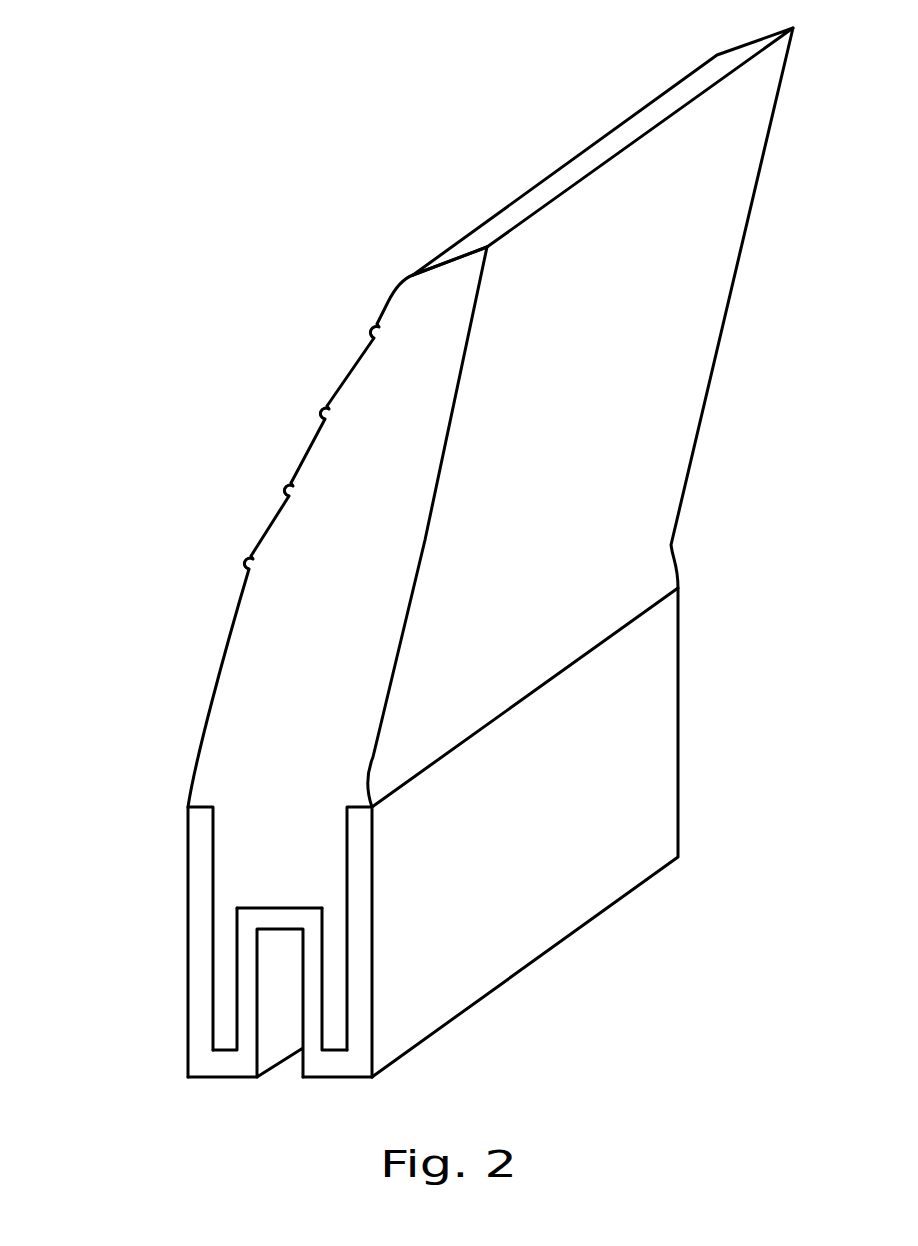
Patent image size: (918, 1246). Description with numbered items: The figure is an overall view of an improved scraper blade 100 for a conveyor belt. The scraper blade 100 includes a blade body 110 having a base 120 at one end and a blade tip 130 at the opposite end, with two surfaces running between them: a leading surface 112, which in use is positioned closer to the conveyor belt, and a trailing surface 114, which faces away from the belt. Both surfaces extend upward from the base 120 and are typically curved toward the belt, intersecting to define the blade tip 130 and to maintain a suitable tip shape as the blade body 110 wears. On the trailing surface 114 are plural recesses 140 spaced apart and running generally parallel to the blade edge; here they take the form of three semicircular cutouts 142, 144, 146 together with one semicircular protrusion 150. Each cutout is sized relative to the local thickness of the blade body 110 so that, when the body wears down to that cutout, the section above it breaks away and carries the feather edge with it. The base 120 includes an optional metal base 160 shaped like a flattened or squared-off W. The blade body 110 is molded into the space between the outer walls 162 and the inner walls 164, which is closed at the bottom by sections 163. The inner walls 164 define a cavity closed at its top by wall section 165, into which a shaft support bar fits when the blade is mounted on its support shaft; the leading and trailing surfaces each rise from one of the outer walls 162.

The scraper blade 100 is at (444, 619).
The blade body 110 is at (383, 584).
The leading surface 112 is at (697, 402).
The trailing surface 114 is at (214, 678).
The base 120 is at (273, 1076).
The blade tip 130 is at (687, 103).
The recesses 140 is at (239, 390).
The semi circular cutout 142 is at (366, 326).
The semi circular cutout 144 is at (320, 412).
The semi circular cutout 146 is at (281, 493).
The semi circular protrusion 150 is at (178, 564).
The metal base 160 is at (416, 899).
The outer walls 162 is at (678, 821).
The sections 163 is at (225, 1068).
The inner walls 164 is at (238, 975).
The wall section 165 is at (272, 908).